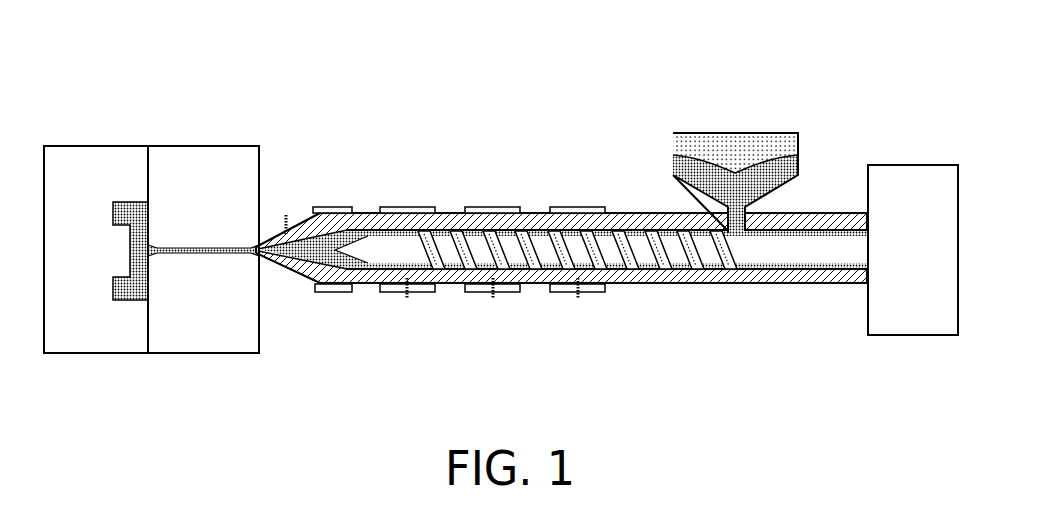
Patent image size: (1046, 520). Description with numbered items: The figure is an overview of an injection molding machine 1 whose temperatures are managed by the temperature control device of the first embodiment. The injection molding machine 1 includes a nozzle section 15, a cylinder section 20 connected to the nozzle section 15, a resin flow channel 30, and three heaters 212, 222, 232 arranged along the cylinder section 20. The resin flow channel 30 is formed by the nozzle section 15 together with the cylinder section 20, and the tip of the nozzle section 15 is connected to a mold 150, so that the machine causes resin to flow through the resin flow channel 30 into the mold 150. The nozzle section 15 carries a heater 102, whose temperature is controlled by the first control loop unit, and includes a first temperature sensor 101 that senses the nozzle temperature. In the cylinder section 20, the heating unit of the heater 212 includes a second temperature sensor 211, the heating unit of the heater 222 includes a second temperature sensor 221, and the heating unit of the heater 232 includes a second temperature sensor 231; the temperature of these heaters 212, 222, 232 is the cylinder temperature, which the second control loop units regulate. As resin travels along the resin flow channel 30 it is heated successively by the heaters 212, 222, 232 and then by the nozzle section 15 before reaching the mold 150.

The injection molding machine 1 is at (826, 58).
The nozzle section 15 is at (293, 227).
The cylinder section 20 is at (374, 283).
The resin flow channel 30 is at (302, 272).
The first temperature sensor 101 is at (286, 214).
The heater 102 is at (343, 207).
The mold 150 is at (192, 153).
The second temperature sensor 211 is at (408, 300).
The heater 212 is at (412, 207).
The second temperature sensor 221 is at (493, 300).
The heater 222 is at (493, 207).
The second temperature sensor 231 is at (580, 300).
The heater 232 is at (585, 207).